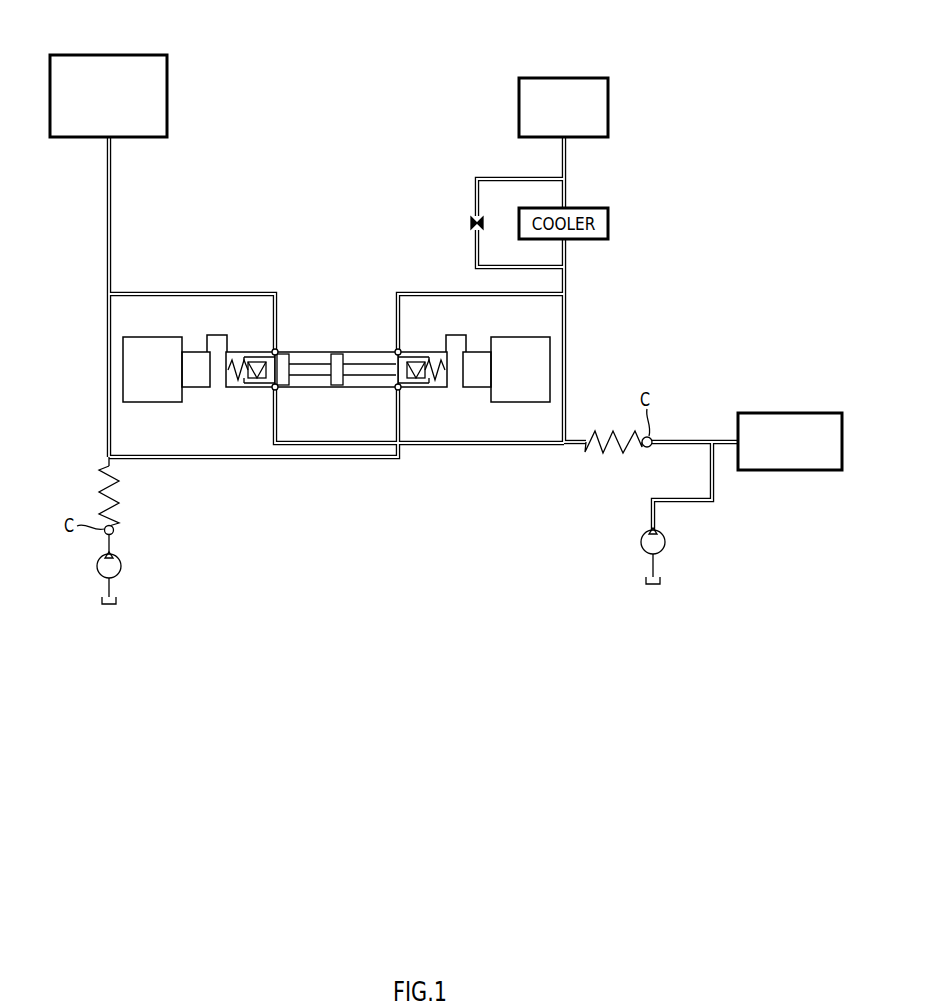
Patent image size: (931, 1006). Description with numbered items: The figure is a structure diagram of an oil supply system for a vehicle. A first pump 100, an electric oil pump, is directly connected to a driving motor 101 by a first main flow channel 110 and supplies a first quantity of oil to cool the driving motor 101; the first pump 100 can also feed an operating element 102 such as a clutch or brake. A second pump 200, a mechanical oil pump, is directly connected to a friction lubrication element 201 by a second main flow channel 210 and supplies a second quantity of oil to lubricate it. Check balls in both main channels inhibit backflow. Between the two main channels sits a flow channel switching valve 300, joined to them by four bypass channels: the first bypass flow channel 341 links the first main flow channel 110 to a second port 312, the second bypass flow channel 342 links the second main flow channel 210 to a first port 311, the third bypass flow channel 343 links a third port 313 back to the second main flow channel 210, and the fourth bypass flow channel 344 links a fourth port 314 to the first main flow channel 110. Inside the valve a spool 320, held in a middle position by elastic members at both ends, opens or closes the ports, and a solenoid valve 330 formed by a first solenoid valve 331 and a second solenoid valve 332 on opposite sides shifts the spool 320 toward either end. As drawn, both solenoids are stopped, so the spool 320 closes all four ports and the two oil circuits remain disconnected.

The first pump 100 is at (647, 527).
The driving motor 101 is at (563, 77).
The operating element 102 is at (788, 412).
The first main flow channel 110 is at (568, 277).
The second pump 200 is at (96, 566).
The friction lubrication element 201 is at (108, 54).
The second main flow channel 210 is at (106, 243).
The flow channel switching valve 300 is at (336, 400).
The first port 311 is at (394, 390).
The second port 312 is at (278, 390).
The third port 313 is at (278, 349).
The fourth port 314 is at (394, 349).
The spool 320 is at (320, 362).
The solenoid valve 330 is at (283, 508).
The first solenoid valve 331 is at (500, 402).
The second solenoid valve 332 is at (172, 402).
The first bypass flow channel 341 is at (499, 446).
The second bypass flow channel 342 is at (192, 459).
The third bypass flow channel 343 is at (192, 293).
The fourth bypass flow channel 344 is at (426, 293).